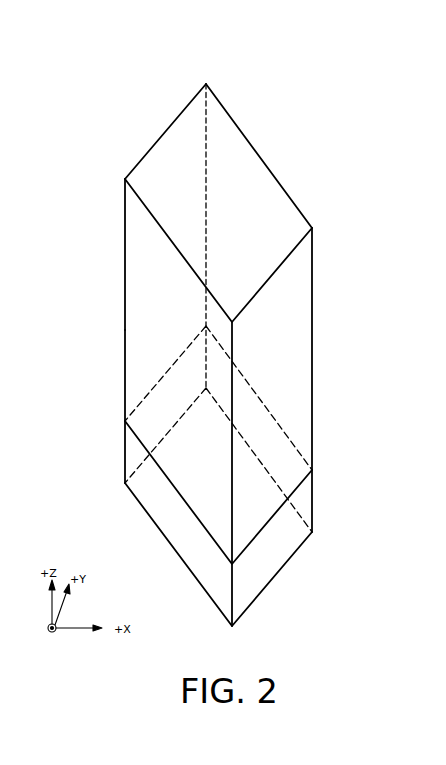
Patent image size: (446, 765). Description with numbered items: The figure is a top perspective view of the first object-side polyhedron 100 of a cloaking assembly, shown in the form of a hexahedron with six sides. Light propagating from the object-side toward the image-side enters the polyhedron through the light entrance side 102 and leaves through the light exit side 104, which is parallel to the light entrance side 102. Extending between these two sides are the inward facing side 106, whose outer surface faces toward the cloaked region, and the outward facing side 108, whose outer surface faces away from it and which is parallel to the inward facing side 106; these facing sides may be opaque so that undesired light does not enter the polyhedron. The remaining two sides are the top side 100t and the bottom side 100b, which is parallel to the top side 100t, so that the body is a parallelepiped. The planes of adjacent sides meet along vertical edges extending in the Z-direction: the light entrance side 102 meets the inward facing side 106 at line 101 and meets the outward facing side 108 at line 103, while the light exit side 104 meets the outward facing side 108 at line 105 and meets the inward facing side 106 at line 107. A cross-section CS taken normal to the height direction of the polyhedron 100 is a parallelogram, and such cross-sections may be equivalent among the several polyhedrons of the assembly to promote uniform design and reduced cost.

The first object-side polyhedron 100 is at (221, 336).
The top side 100t is at (238, 201).
The bottom side 100b is at (282, 567).
The line 101 is at (124, 240).
The light entrance side 102 is at (168, 130).
The line 103 is at (209, 187).
The light exit side 104 is at (300, 424).
The line 105 is at (313, 372).
The inward facing side 106 is at (127, 337).
The line 107 is at (232, 481).
The outward facing side 108 is at (293, 198).
The cross-section CS is at (140, 419).